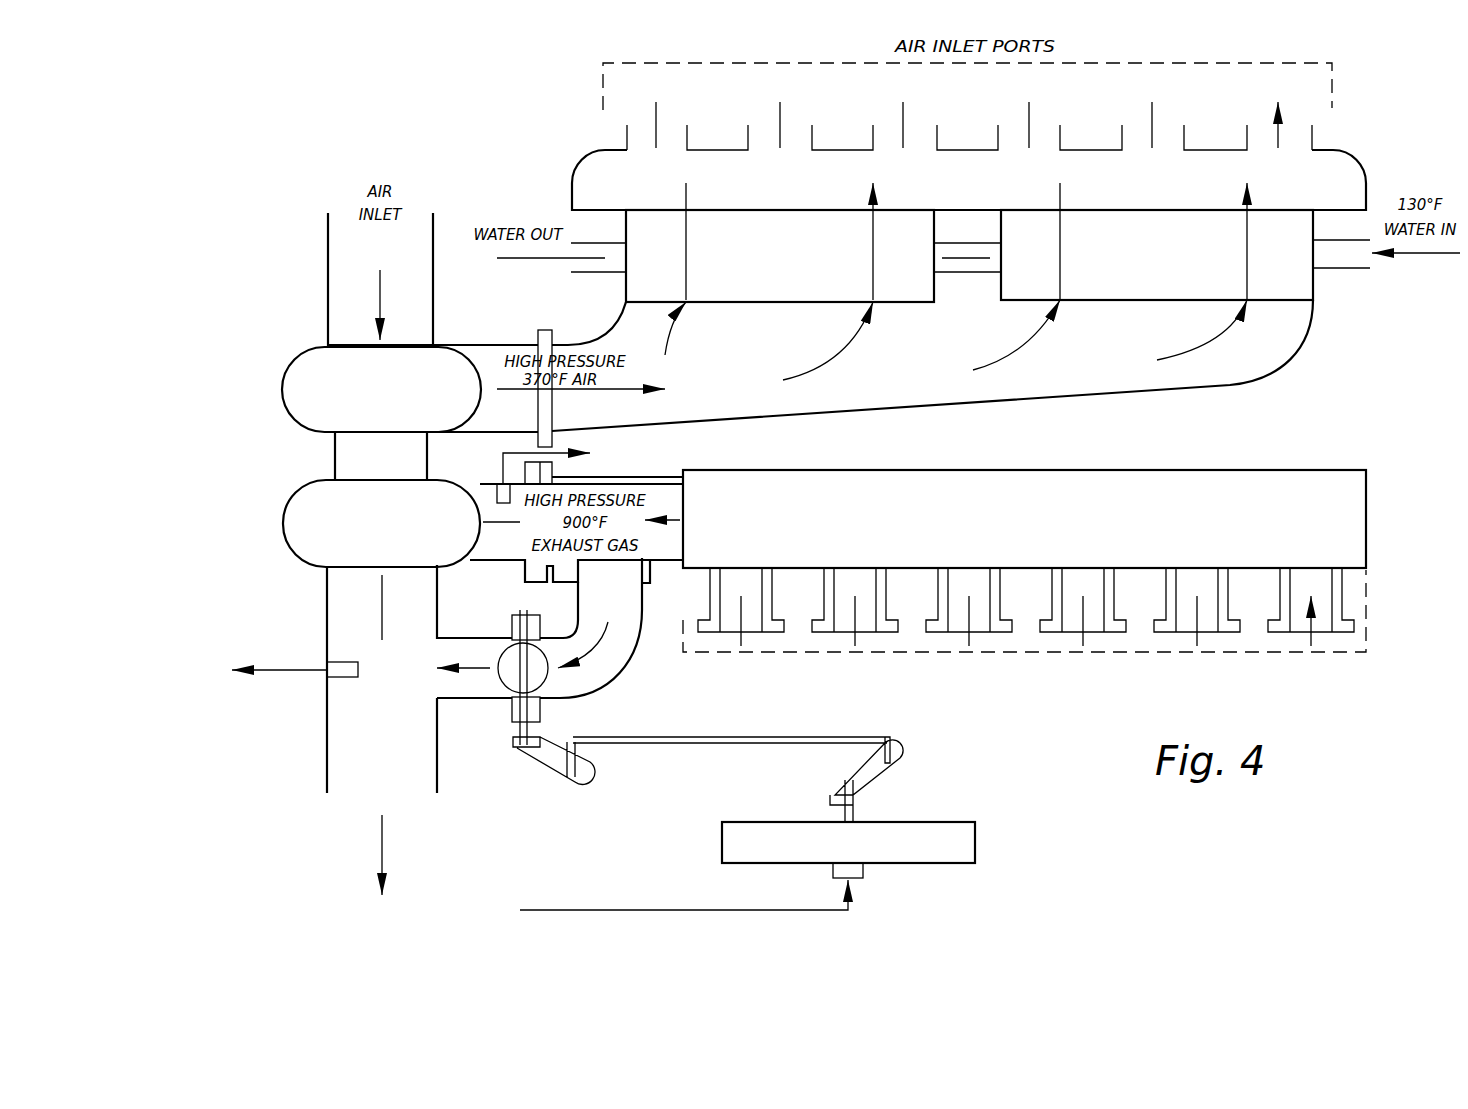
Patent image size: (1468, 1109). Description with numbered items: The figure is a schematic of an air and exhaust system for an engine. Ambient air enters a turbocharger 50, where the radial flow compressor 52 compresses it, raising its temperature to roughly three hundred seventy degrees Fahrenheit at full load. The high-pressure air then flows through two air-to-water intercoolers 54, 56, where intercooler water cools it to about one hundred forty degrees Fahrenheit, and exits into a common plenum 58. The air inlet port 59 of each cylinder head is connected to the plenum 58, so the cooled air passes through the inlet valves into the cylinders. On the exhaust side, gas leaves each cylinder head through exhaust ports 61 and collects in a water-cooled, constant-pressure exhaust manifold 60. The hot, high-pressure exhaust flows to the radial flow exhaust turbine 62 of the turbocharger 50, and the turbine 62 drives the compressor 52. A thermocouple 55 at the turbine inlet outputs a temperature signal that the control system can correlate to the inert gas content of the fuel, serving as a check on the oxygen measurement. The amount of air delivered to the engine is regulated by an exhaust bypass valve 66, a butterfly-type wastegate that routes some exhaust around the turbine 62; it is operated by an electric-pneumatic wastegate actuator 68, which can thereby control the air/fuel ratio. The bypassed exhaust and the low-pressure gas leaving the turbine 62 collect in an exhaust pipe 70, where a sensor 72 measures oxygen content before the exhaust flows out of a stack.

The turbocharger 50 is at (295, 471).
The compressor 52 is at (282, 390).
The air-to-water intercooler 54 is at (771, 302).
The thermocouple 55 is at (507, 497).
The air-to-water intercooler 56 is at (1138, 300).
The common plenum 58 is at (980, 183).
The air inlet port 59 is at (968, 112).
The exhaust manifold 60 is at (1366, 512).
The exhaust ports 61 is at (1024, 634).
The exhaust turbine 62 is at (283, 524).
The exhaust bypass valve 66 is at (478, 728).
The wastegate actuator 68 is at (978, 843).
The exhaust pipe 70 is at (355, 614).
The sensor 72 is at (360, 668).